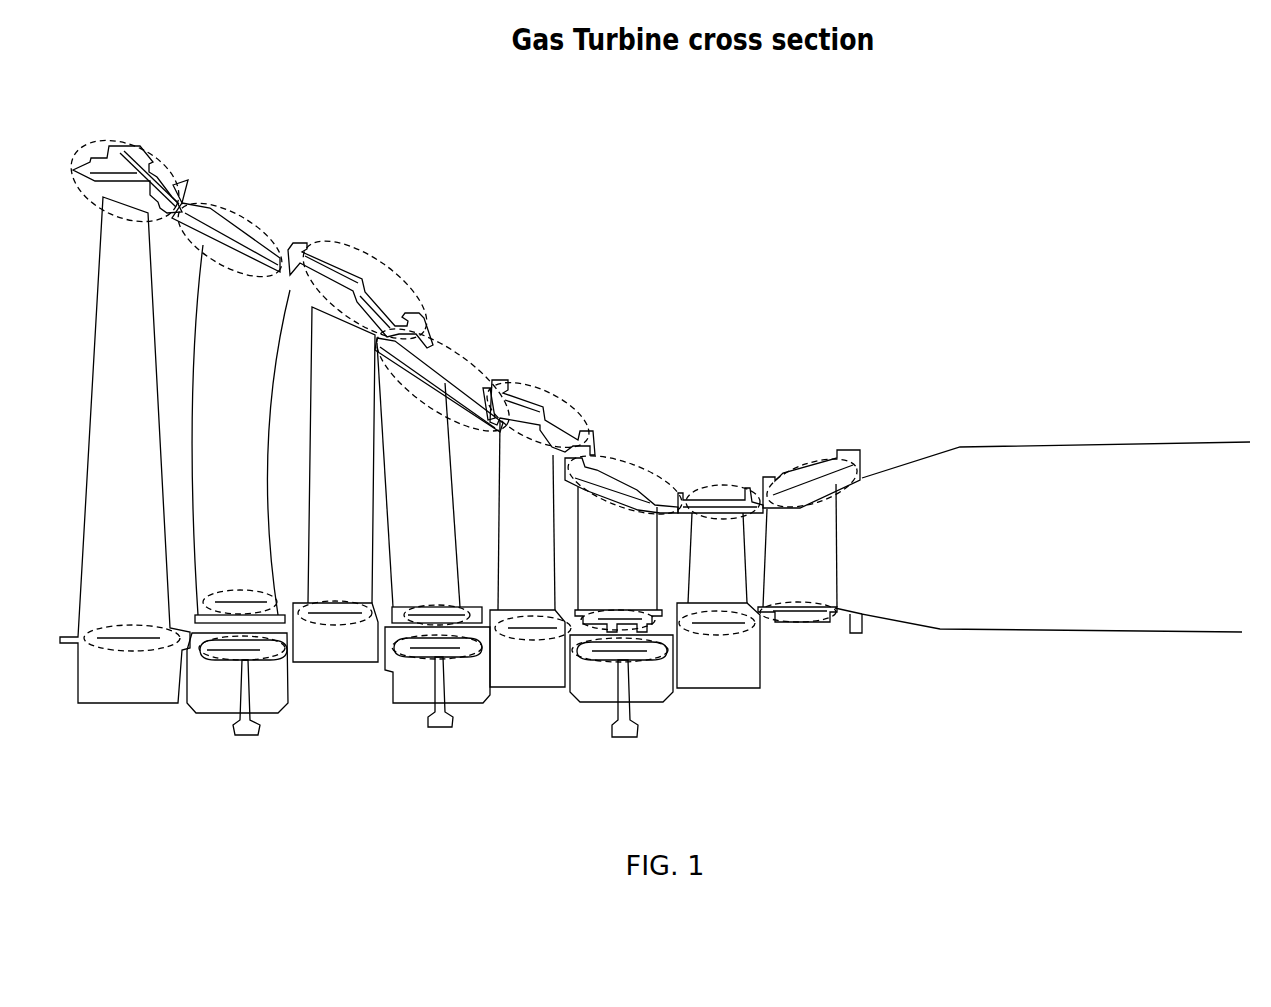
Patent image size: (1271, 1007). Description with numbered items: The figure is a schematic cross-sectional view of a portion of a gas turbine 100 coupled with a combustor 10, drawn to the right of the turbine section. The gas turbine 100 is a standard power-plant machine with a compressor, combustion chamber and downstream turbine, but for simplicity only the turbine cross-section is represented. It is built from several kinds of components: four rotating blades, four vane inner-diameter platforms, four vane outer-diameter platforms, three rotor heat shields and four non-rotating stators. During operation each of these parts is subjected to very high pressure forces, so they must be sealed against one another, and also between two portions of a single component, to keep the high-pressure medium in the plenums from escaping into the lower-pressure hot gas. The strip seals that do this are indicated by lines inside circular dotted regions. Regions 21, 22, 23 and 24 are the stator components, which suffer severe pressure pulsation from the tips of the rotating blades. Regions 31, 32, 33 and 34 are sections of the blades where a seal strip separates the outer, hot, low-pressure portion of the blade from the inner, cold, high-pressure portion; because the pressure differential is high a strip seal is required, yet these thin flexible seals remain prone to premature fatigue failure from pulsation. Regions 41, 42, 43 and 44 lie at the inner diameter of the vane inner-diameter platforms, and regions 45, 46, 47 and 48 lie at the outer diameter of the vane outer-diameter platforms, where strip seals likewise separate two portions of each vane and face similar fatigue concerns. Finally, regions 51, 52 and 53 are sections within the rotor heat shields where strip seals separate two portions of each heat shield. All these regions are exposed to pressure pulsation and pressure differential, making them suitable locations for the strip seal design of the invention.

The combustor 10 is at (1062, 502).
The gas turbine 100 is at (1110, 765).
The strip seal region of stator S1 21 is at (737, 487).
The strip seal region of stator S2 22 is at (570, 417).
The strip seal region of stator S3 23 is at (382, 282).
The strip seal region of stator S4 24 is at (173, 165).
The strip seal region of blade B1 31 is at (745, 635).
The strip seal region of blade B2 32 is at (537, 640).
The strip seal region of blade B3 33 is at (335, 627).
The strip seal region of blade B4 34 is at (133, 652).
The strip seal region of vane ID platform V1 41 is at (817, 605).
The strip seal region of vane ID platform V2 42 is at (635, 612).
The strip seal region of vane ID platform V3 43 is at (440, 600).
The strip seal region of vane ID platform V4 44 is at (253, 592).
The strip seal region of vane OD platform Vo1 45 is at (837, 463).
The strip seal region of vane OD platform Vo2 46 is at (645, 489).
The strip seal region of vane OD platform Vo3 47 is at (477, 375).
The strip seal region of vane OD platform Vo4 48 is at (257, 227).
The strip seal region of rotor heat shield R1 51 is at (648, 662).
The strip seal region of rotor heat shield R2 52 is at (412, 660).
The strip seal region of rotor heat shield R3 53 is at (223, 663).